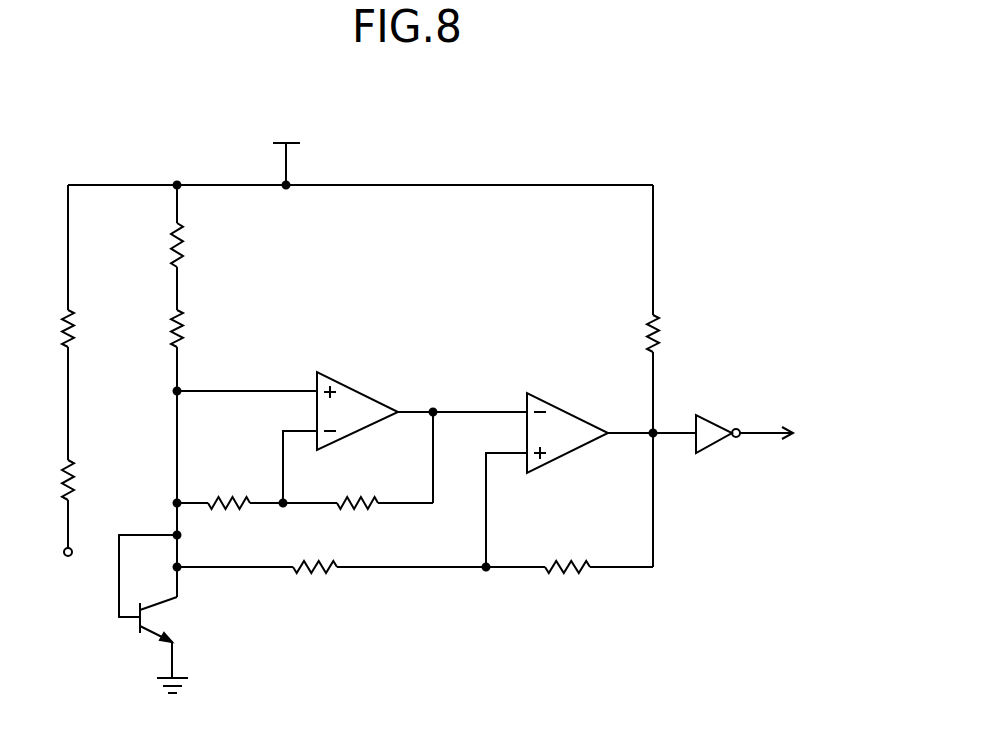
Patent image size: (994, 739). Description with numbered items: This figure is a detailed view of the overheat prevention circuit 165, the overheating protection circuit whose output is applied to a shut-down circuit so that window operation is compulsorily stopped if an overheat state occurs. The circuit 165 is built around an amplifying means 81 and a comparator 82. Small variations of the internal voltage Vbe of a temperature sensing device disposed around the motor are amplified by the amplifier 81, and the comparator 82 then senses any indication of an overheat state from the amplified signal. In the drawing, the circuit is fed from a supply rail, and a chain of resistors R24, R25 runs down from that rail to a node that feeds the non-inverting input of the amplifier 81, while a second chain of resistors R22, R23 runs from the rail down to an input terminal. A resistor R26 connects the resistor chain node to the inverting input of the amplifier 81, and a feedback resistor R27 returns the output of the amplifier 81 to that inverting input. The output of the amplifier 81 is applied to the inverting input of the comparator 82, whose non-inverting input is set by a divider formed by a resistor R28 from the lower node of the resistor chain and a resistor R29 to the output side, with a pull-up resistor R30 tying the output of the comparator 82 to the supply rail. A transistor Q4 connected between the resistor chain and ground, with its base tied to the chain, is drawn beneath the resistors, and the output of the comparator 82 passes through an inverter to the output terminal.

The overheat prevention circuit 165 is at (682, 143).
The resistor R22 is at (100, 330).
The resistor R23 is at (100, 480).
The resistor R24 is at (209, 245).
The resistor R25 is at (209, 330).
The resistor R26 is at (227, 485).
The resistor R27 is at (354, 484).
The resistor R28 is at (312, 584).
The resistor R29 is at (566, 585).
The resistor R30 is at (685, 333).
The amplifying means 81 is at (360, 390).
The comparator 82 is at (569, 410).
The transistor Q4 is at (165, 614).